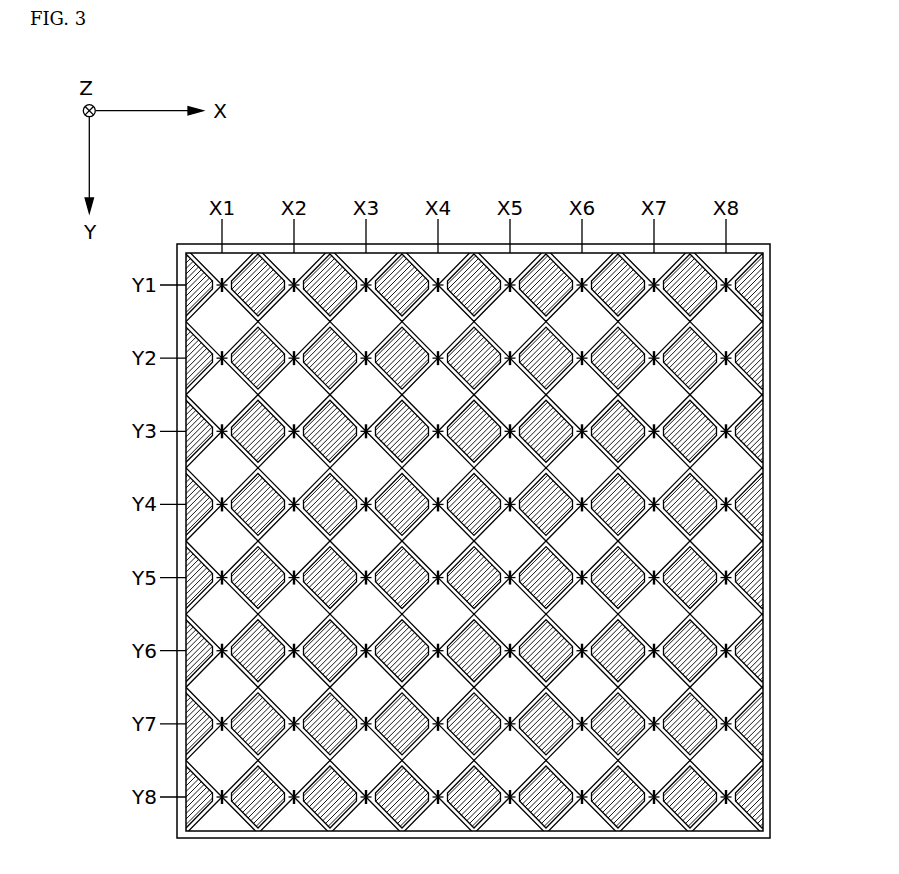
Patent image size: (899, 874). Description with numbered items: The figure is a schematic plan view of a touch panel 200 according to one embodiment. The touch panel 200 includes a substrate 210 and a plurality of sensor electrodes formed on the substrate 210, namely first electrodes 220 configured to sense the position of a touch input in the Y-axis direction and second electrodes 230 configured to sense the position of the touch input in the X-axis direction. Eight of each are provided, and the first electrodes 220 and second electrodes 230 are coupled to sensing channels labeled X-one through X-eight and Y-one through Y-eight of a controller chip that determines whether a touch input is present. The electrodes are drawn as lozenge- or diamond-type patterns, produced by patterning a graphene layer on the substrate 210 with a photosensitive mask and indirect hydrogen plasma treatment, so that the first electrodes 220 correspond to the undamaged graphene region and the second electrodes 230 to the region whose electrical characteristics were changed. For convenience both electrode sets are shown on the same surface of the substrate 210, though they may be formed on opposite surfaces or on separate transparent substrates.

The touch panel 200 is at (568, 157).
The substrate 210 is at (179, 244).
The first electrodes 220 is at (186, 303).
The second electrodes 230 is at (233, 258).